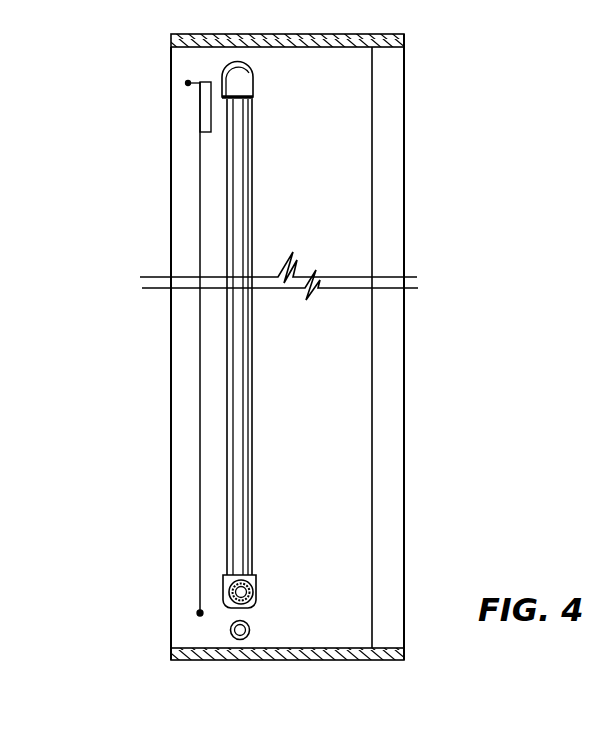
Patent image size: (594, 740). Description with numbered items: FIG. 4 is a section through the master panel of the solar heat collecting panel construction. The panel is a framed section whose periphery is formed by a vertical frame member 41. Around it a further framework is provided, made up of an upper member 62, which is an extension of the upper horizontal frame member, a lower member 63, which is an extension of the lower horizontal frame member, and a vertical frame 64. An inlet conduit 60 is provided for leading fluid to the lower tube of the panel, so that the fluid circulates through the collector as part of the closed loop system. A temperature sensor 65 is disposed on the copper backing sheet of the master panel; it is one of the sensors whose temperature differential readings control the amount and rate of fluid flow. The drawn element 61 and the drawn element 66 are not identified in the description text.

The lamp housing unit 41 is at (303, 361).
The inlet fitting 60 is at (237, 641).
The ultraviolet lamp tube 61 is at (240, 153).
The top end plate 62 is at (360, 34).
The bottom end plate 63 is at (296, 655).
The side wall 64 is at (390, 406).
The mounting bracket 65 is at (208, 91).
The support rod 66 is at (200, 468).